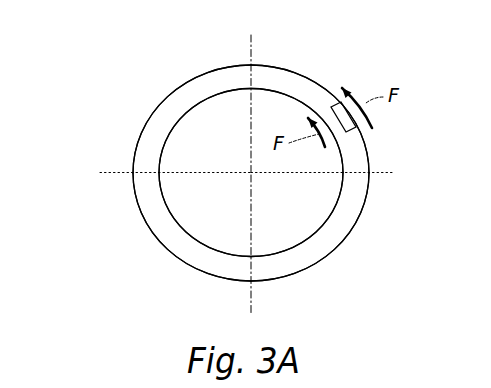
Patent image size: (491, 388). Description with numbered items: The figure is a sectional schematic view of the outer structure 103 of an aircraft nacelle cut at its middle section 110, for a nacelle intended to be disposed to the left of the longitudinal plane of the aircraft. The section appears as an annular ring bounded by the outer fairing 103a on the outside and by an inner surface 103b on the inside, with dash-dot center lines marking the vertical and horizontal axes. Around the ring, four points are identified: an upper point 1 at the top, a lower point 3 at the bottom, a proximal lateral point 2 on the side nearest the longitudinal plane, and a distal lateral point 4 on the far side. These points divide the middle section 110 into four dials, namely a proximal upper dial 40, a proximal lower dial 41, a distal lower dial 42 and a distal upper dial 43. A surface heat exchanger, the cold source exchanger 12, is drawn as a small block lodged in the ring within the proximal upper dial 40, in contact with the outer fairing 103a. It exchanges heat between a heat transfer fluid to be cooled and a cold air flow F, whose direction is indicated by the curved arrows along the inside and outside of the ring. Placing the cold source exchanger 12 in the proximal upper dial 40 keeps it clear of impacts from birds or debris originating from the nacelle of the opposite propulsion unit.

The middle section 110 is at (110, 58).
The outer structure 103 is at (199, 65).
The outer fairing 103a is at (360, 215).
The inner surface of ring 103b is at (330, 214).
The upper point 1 is at (252, 65).
The proximal lateral point 2 is at (370, 173).
The lower point 3 is at (249, 281).
The distal lateral point 4 is at (133, 172).
The proximal upper dial 40 is at (303, 87).
The proximal lower dial 41 is at (335, 235).
The distal lower dial 42 is at (167, 228).
The distal upper dial 43 is at (167, 117).
The cold source exchanger 12 is at (348, 134).